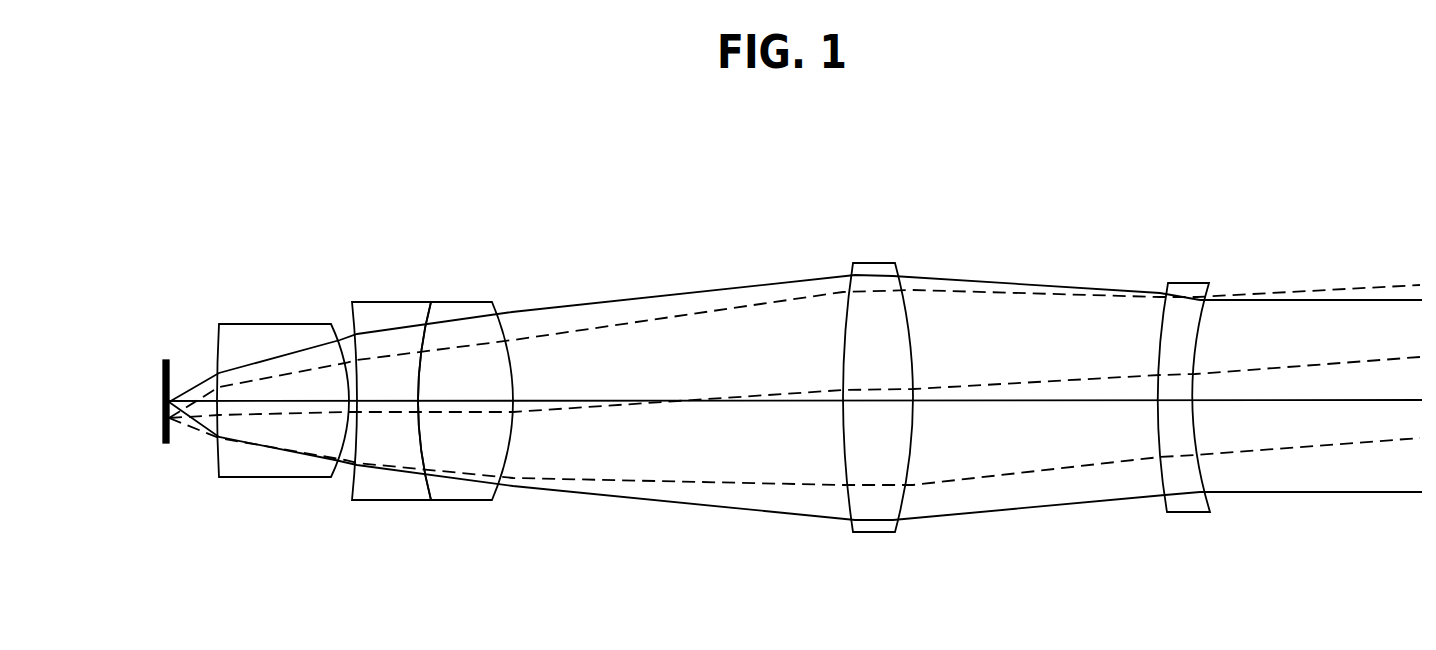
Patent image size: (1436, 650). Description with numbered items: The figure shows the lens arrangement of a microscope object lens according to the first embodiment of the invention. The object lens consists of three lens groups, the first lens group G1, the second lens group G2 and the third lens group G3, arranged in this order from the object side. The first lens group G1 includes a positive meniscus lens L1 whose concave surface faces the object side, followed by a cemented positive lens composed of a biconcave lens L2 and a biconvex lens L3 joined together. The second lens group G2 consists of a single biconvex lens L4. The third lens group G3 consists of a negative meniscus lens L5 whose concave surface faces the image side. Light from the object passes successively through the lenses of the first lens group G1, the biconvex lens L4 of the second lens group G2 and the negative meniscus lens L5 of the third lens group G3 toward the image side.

The positive meniscus lens L1 is at (278, 323).
The biconcave lens L2 is at (392, 302).
The biconvex lens L3 is at (460, 302).
The biconvex lens L4 is at (875, 262).
The negative meniscus lens L5 is at (1195, 283).
The first lens group G1 is at (365, 402).
The second lens group G2 is at (878, 384).
The third lens group G3 is at (1192, 387).